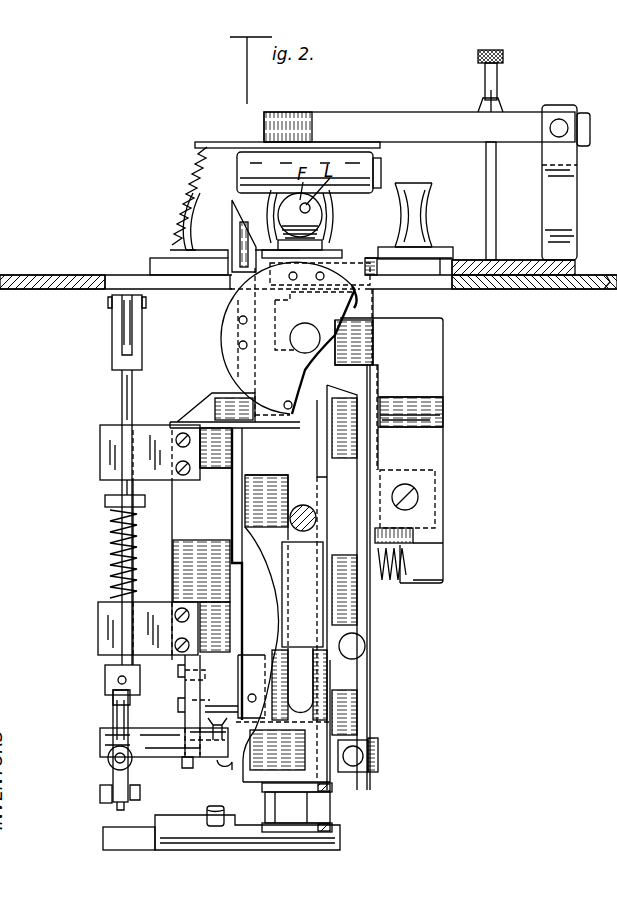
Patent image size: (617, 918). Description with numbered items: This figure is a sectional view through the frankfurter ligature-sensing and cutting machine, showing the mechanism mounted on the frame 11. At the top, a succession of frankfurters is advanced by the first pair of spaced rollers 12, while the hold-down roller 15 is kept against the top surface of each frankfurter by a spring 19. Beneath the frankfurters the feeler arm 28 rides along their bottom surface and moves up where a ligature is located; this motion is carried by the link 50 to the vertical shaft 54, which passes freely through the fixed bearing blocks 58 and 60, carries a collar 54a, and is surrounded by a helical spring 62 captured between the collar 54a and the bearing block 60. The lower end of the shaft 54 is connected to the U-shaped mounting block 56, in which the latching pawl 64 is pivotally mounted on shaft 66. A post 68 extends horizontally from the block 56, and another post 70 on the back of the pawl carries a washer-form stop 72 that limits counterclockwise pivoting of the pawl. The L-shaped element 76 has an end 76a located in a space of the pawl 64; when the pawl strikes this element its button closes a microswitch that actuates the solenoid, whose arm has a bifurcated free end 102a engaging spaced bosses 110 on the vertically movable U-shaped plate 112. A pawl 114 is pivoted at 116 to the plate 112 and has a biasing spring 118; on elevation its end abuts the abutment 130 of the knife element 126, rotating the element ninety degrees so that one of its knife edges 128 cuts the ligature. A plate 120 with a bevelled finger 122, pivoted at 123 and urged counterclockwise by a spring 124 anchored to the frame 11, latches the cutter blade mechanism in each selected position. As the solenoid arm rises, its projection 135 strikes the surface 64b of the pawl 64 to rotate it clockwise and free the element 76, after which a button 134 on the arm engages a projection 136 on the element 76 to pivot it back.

The frame 11 is at (370, 312).
The first pair of spaced rollers 12 is at (205, 203).
The hold-down roller 15 is at (252, 160).
The spring 19 is at (172, 222).
The feeler arm 28 is at (320, 238).
The link 50 is at (125, 318).
The vertical shaft 54 is at (121, 383).
The collar 54a is at (106, 500).
The U-shaped mounting block 56 is at (108, 680).
The fixed bearing block 58 is at (110, 440).
The fixed bearing block 60 is at (108, 618).
The helical spring 62 is at (110, 548).
The latching pawl 64 is at (118, 712).
The surface of pawl 64b is at (118, 808).
The shaft 66 is at (98, 790).
The post 68 is at (118, 678).
The post 70 is at (108, 752).
The stop 72 is at (112, 762).
The L-shaped element 76 is at (233, 720).
The end of L-shaped element 76a is at (100, 737).
The free end of solenoid arm 102a is at (320, 810).
The spaced bosses 110 is at (332, 788).
The U-shaped plate 112 is at (275, 460).
The pawl 114 is at (322, 440).
The pivot 116 is at (358, 642).
The biasing spring 118 is at (378, 750).
The plate 120 is at (441, 400).
The bevelled finger 122 is at (350, 344).
The pivot 123 is at (418, 497).
The spring 124 is at (395, 580).
The knife element 126 is at (236, 352).
The knife edges 128 is at (233, 235).
The abutment 130 is at (348, 315).
The button 134 is at (210, 808).
The projection 135 is at (110, 840).
The projection 136 is at (232, 771).